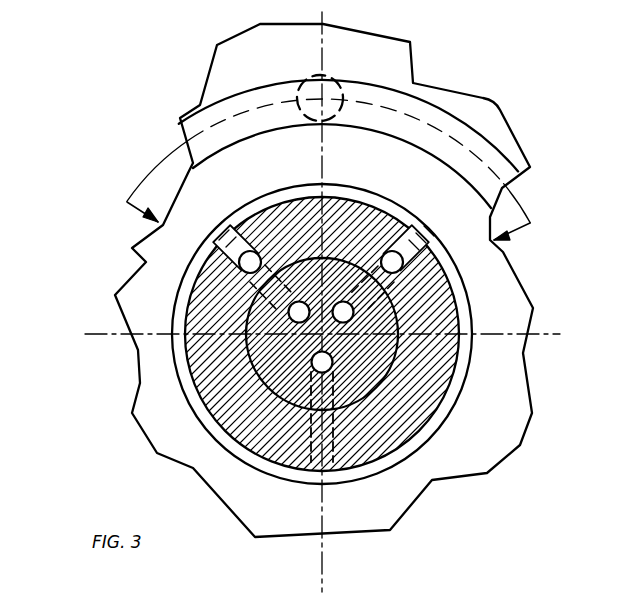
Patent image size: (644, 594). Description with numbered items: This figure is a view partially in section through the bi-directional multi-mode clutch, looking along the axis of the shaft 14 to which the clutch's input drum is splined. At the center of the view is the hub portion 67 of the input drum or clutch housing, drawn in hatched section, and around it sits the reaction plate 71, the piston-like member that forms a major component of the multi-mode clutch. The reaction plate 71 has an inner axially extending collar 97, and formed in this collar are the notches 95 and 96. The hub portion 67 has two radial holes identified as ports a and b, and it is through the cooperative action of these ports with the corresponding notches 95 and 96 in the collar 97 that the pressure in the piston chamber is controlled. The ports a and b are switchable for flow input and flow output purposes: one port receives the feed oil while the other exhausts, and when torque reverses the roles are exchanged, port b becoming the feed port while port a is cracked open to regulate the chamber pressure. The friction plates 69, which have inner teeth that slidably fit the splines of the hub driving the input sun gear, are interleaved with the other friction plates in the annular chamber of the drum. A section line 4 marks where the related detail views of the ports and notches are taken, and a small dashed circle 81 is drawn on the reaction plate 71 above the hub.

The shaft 14 is at (270, 387).
The inner hub 67 is at (400, 407).
The friction plates 69 is at (335, 458).
The reaction plate 71 is at (186, 112).
The pin hole 81 is at (338, 84).
The notch 95 is at (235, 210).
The notch 96 is at (397, 208).
The inner axially extending collar 97 is at (360, 192).
The section line 4- 4 is at (328, 177).
The port a is at (188, 276).
The port b is at (402, 244).